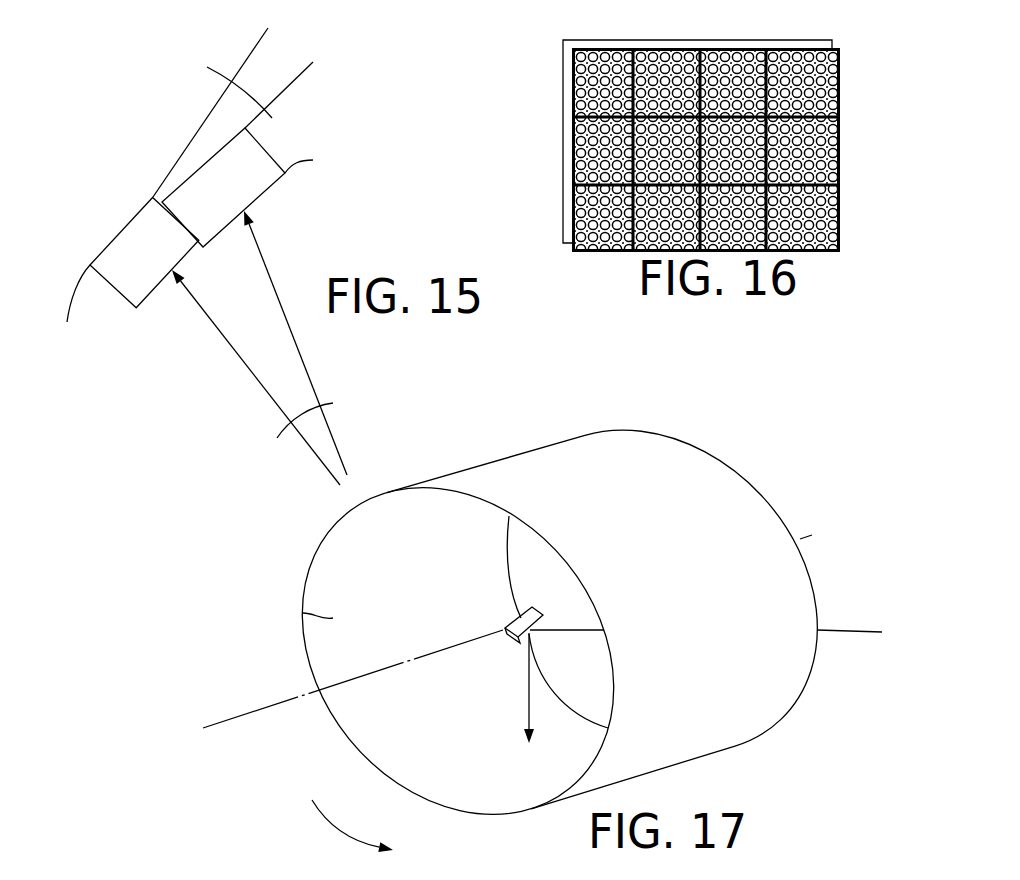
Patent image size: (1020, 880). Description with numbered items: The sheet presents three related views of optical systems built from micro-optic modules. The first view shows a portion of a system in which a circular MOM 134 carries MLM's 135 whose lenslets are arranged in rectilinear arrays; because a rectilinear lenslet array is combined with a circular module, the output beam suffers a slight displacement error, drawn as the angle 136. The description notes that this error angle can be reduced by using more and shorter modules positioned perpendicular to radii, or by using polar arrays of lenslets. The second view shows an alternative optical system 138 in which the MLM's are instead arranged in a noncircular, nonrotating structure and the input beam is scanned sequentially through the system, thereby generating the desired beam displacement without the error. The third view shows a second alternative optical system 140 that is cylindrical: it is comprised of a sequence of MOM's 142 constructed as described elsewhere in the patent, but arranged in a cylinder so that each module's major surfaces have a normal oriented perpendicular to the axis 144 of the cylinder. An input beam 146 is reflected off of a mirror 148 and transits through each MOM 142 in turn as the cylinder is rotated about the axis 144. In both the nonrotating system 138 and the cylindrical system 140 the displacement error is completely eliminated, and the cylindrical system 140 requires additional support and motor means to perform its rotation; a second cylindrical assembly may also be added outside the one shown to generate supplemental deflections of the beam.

In FIG. 15, the circular MOM 134 is at (338, 229).
In FIG. 15, the MLM's 135 is at (130, 245).
In FIG. 15, the angle 136 is at (243, 83).
In FIG. 16, the alternative optical system 138 is at (840, 127).
In FIG. 17, the second alternative optical system 140 is at (705, 423).
In FIG. 17, the MOM's 142 is at (303, 613).
In FIG. 17, the axis 144 is at (800, 539).
In FIG. 17, the input beam 146 is at (845, 630).
In FIG. 17, the mirror 148 is at (518, 620).